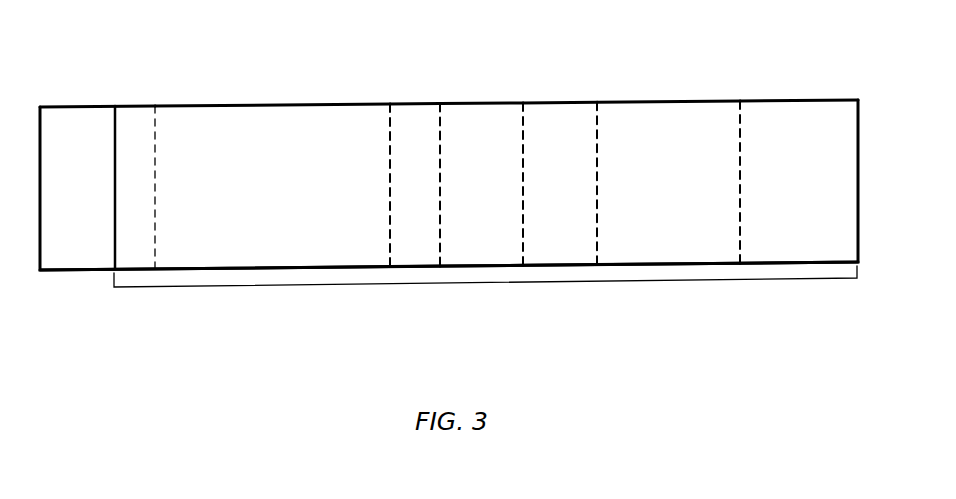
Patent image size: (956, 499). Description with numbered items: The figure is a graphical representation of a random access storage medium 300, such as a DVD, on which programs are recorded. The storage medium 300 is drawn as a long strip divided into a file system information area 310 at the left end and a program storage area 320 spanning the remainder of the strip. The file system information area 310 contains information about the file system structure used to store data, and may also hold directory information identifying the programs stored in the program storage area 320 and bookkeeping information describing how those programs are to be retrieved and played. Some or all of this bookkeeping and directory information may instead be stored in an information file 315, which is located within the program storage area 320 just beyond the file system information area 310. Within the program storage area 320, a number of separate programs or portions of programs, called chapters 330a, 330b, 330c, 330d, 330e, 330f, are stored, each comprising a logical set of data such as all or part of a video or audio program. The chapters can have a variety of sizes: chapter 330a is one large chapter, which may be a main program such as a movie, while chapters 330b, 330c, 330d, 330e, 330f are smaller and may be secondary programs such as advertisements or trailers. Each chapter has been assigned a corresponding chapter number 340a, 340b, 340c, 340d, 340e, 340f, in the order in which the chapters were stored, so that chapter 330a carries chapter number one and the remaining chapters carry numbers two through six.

The storage medium 300 is at (449, 167).
The file system information area 310 is at (72, 243).
The information file 315 is at (137, 115).
The program storage area 320 is at (347, 287).
The chapter 330a is at (257, 117).
The chapter 330b is at (410, 112).
The chapter 330c is at (477, 112).
The chapter 330d is at (565, 112).
The chapter 330e is at (660, 107).
The chapter 330f is at (785, 112).
The chapter number 340a is at (266, 205).
The chapter number 340b is at (415, 205).
The chapter number 340c is at (488, 212).
The chapter number 340d is at (557, 205).
The chapter number 340e is at (666, 210).
The chapter number 340f is at (798, 205).